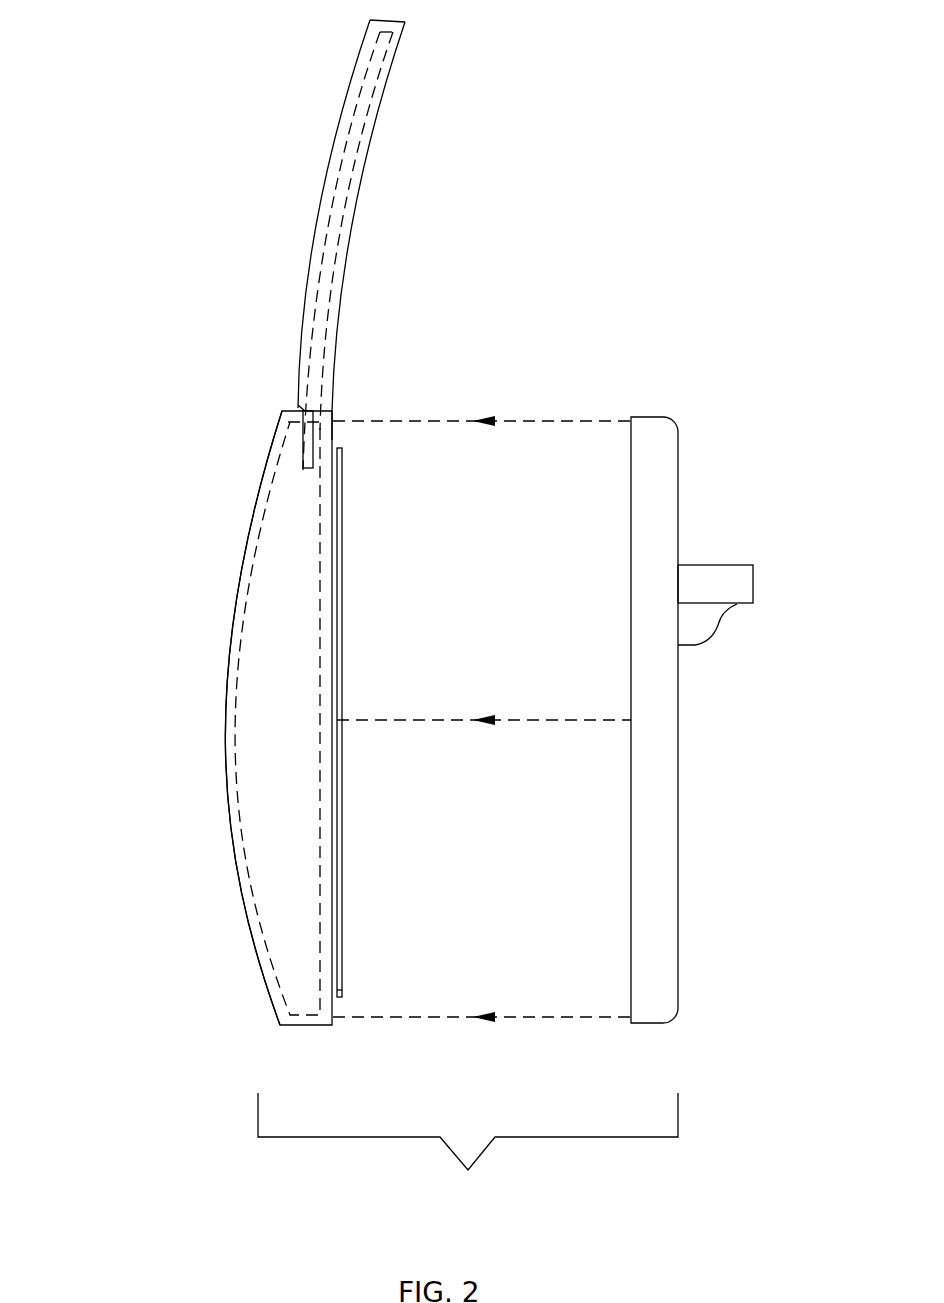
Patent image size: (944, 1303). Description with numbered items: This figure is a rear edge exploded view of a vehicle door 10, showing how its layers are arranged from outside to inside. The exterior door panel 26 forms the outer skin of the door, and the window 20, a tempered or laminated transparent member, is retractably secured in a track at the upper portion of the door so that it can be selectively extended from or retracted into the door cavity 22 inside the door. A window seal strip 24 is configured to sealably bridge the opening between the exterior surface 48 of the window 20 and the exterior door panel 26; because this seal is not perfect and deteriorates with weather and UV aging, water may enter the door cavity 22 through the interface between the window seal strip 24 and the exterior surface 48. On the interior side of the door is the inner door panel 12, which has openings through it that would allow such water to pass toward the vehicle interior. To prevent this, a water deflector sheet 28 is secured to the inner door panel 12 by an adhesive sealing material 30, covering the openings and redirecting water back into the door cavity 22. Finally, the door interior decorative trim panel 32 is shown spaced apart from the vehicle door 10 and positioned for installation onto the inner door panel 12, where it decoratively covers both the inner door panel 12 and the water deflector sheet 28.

The vehicle door 10 is at (118, 1001).
The inner door panel 12 is at (333, 437).
The window 20 is at (340, 194).
The door cavity 22 is at (275, 617).
The window seal strip 24 is at (297, 407).
The exterior door panel 26 is at (253, 510).
The water deflector sheet 28 is at (343, 948).
The adhesive sealing material 30 is at (337, 1000).
The door interior decorative trim panel 32 is at (660, 842).
The exterior surface of the window 48 is at (315, 290).